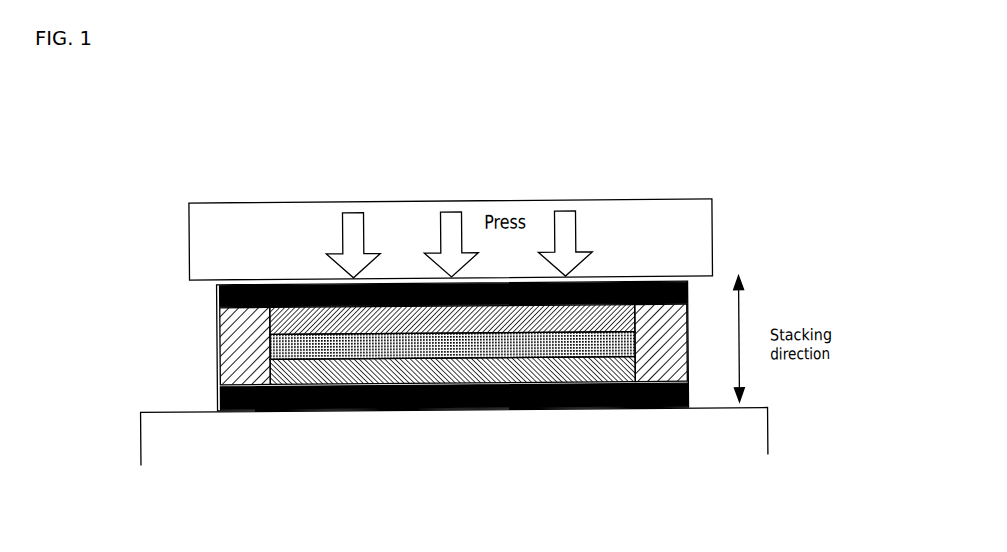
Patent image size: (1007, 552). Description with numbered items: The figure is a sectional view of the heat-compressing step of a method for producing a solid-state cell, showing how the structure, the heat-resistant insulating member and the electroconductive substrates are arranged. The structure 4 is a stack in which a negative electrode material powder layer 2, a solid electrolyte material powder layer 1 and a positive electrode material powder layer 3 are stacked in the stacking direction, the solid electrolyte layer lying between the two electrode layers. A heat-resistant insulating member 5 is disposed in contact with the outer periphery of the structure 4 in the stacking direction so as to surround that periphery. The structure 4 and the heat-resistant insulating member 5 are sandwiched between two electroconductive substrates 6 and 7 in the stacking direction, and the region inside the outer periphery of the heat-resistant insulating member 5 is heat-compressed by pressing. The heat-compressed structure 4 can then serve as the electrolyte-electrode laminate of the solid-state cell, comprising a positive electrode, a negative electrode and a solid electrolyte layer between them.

The solid electrolyte material powder layer 1 is at (287, 347).
The negative electrode material powder layer 2 is at (285, 319).
The positive electrode material powder layer 3 is at (283, 372).
The structure 4 is at (367, 344).
The heat-resistant insulating member 5 is at (240, 306).
The electroconductive substrate 6 is at (324, 296).
The electroconductive substrate 7 is at (325, 394).